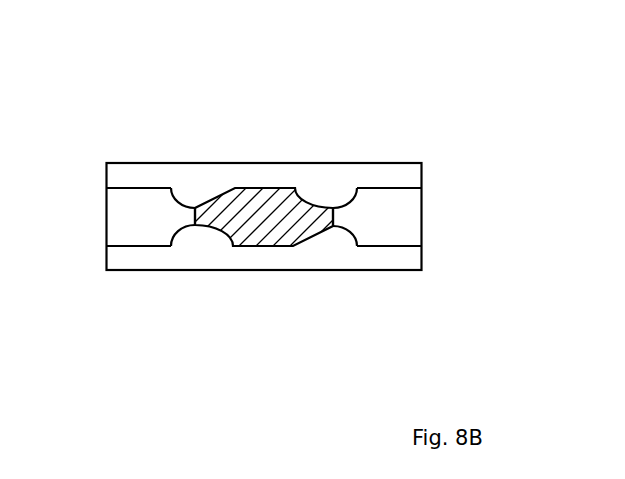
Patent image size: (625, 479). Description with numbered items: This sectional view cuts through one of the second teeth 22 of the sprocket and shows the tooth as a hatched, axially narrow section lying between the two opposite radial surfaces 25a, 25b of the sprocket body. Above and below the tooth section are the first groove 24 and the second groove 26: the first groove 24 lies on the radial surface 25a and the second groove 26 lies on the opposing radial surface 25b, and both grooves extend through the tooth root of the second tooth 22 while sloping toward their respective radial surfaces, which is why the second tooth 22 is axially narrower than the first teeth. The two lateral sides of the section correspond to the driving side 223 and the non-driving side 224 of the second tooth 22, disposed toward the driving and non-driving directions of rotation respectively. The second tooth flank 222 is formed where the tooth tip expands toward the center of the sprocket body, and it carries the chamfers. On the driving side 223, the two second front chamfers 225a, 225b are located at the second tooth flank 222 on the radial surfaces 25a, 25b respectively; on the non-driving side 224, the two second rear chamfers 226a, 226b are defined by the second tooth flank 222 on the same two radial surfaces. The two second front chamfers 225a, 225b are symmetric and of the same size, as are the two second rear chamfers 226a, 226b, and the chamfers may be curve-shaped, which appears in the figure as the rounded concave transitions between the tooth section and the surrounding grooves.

The second tooth 22 is at (248, 204).
The second tooth flank 222 is at (250, 197).
The driving side 223 is at (334, 216).
The non-driving side 224 is at (107, 187).
The first groove 24 is at (375, 258).
The radial surface 25a is at (130, 270).
The opposing radial surface 25b is at (147, 163).
The second front chamfer 225a is at (318, 231).
The second front chamfer 225b is at (310, 206).
The second rear chamfer 226a is at (208, 232).
The second rear chamfer 226b is at (213, 207).
The second groove 26 is at (373, 170).